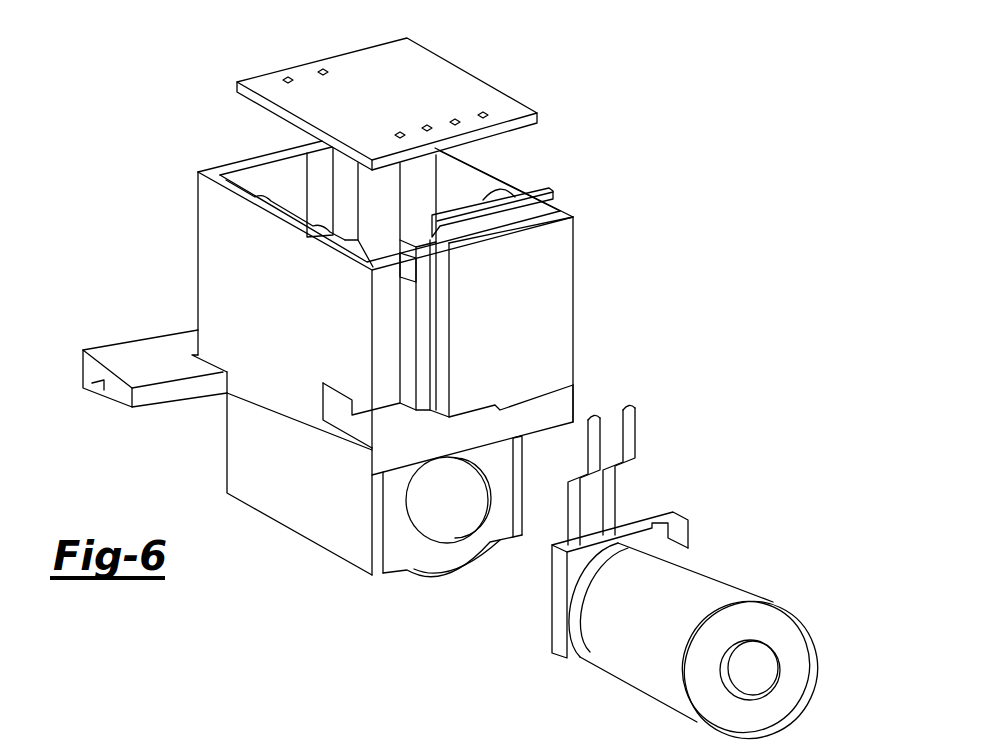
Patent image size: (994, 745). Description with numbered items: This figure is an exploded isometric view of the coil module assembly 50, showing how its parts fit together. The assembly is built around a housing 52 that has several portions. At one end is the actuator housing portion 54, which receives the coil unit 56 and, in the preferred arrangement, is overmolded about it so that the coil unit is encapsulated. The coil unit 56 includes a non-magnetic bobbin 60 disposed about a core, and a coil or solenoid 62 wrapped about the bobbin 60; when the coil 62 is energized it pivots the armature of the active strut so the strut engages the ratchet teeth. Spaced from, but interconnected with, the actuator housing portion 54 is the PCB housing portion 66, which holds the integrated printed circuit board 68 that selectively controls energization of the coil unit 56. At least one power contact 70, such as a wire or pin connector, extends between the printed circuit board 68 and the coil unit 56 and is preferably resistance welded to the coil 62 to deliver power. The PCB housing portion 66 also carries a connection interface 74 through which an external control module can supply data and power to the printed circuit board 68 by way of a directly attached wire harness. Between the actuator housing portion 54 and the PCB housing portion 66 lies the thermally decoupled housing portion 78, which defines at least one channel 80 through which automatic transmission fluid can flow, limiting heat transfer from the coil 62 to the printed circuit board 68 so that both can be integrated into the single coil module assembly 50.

The coil module assembly 50 is at (653, 120).
The housing 52 is at (231, 421).
The actuator housing portion 54 is at (352, 542).
The coil unit 56 is at (807, 692).
The bobbin 60 is at (797, 633).
The coil 62 is at (722, 593).
The PCB housing portion 66 is at (213, 218).
The printed circuit board 68 is at (357, 97).
The power contact 70 is at (630, 428).
The connection interface 74 is at (552, 302).
The thermally decoupled housing portion 78 is at (297, 397).
The channel 80 is at (362, 432).